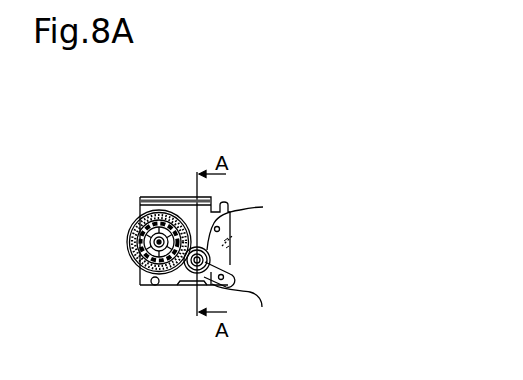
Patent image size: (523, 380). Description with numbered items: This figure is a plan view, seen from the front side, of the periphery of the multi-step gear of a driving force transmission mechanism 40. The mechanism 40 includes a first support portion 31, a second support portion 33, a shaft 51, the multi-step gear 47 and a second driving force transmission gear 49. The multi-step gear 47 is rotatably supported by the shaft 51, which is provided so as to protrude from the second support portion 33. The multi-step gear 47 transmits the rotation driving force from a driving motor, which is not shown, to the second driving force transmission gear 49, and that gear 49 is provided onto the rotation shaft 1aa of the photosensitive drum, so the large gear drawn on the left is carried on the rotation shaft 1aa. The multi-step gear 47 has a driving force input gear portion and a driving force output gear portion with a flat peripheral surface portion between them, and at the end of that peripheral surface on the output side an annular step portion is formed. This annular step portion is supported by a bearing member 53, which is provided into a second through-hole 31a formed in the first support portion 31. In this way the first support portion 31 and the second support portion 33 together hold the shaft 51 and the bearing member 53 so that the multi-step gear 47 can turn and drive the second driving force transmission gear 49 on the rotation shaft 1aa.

The driving force transmission mechanism 40 is at (110, 165).
The first support portion 31 is at (172, 205).
The second driving force transmission gear 49 is at (145, 255).
The bearing member 53 is at (256, 208).
The second through-hole 31a is at (229, 243).
The shaft 51 is at (234, 277).
The multi-step gear 47 is at (245, 308).
The rotation shaft 1aa is at (139, 279).
The second support portion 33 is at (168, 284).